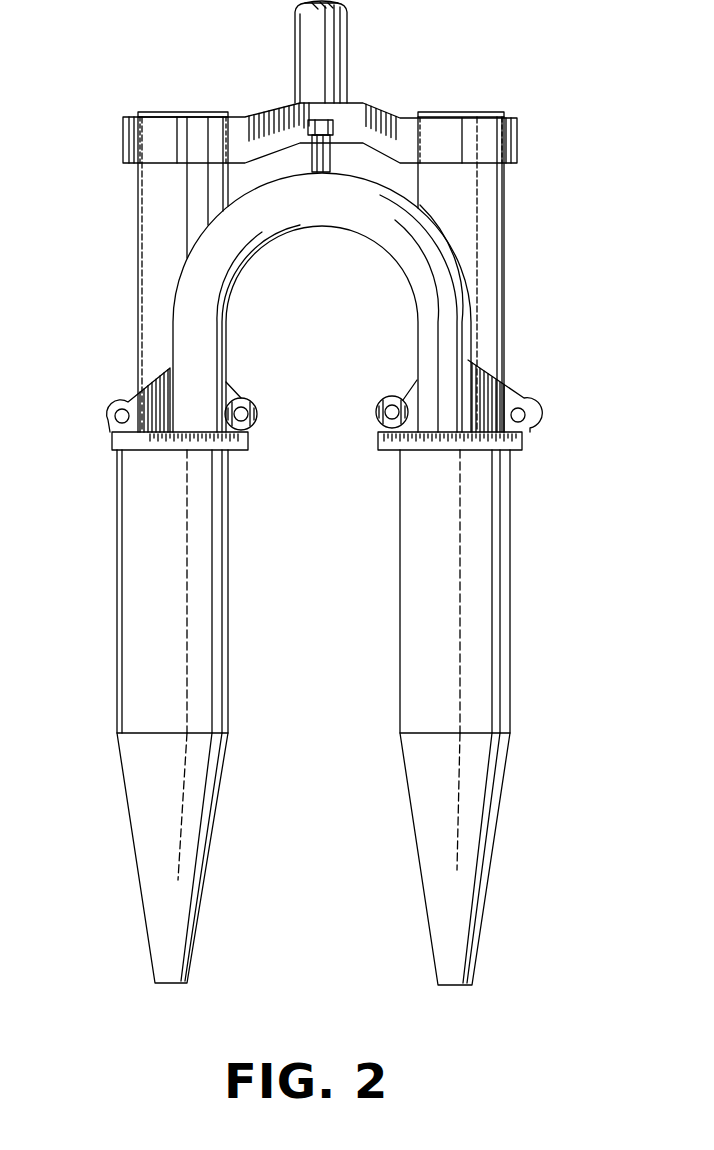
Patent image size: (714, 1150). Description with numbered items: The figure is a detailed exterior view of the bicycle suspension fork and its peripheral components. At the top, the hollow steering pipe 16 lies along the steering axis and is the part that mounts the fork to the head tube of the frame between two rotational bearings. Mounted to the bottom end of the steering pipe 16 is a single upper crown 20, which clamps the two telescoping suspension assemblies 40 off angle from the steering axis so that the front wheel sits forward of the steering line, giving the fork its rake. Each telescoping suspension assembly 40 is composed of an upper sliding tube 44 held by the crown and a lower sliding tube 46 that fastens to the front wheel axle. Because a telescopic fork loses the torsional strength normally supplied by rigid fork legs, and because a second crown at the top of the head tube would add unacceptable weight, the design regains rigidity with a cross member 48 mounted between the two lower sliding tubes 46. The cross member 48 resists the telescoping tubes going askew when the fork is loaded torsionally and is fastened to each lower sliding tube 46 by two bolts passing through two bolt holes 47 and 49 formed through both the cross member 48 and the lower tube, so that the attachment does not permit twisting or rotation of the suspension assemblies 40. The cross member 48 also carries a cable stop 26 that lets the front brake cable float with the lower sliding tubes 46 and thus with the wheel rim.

The hollow steering pipe 16 is at (347, 42).
The upper crown 20 is at (517, 142).
The cable stop 26 is at (308, 122).
The upper sliding tube 44 is at (155, 256).
The cross member 48 is at (290, 207).
The telescoping suspension assembly 40 is at (322, 433).
The bolt hole 49 is at (112, 410).
The bolt hole 47 is at (380, 410).
The lower sliding tube 46 is at (125, 634).